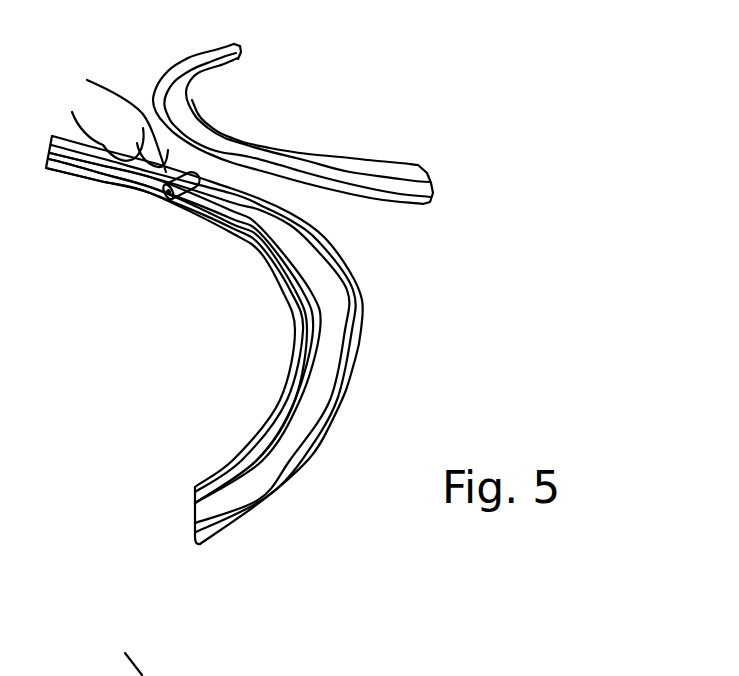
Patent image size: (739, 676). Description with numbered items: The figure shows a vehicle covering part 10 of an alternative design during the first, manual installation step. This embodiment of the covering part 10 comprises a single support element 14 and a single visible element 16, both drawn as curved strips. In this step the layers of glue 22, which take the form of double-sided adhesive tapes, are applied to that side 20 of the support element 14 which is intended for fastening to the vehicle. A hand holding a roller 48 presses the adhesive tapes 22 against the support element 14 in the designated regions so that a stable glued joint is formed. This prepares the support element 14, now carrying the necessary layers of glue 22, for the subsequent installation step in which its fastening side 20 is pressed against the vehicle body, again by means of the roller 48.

The vehicle covering part 10 is at (345, 101).
The support element 14 is at (362, 300).
The visible element 16 is at (201, 121).
The side for fastening to the vehicle 20 is at (318, 327).
The layers of glue 22 is at (345, 289).
The roller 48 is at (190, 203).